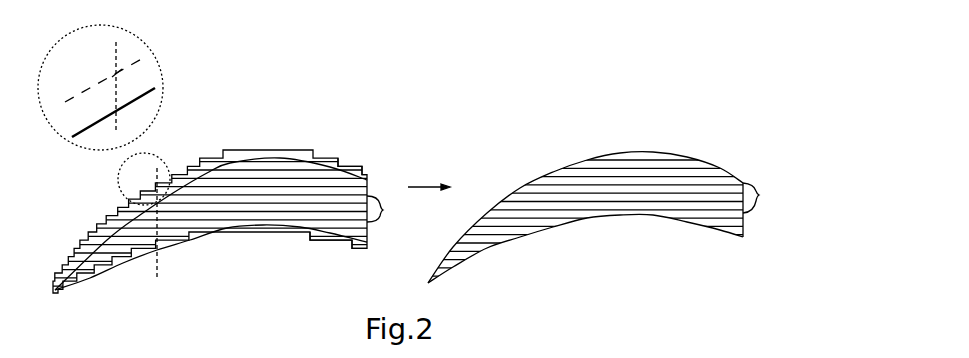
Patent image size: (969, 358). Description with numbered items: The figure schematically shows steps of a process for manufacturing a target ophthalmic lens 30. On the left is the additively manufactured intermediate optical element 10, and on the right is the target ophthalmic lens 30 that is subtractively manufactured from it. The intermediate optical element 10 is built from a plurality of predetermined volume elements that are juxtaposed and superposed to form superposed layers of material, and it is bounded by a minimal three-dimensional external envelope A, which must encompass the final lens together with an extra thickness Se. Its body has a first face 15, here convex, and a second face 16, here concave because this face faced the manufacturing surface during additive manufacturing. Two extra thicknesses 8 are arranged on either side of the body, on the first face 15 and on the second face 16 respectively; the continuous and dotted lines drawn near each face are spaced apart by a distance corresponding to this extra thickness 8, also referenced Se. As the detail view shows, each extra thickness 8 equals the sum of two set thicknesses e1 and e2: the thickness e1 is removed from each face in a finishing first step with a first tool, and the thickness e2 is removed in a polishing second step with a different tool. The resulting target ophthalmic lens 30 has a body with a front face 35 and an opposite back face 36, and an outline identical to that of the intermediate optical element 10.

The intermediate optical element 10 is at (236, 170).
The extra thicknesses 8 is at (212, 157).
The minimal three-dimensional external envelope A is at (238, 157).
The first face 15 is at (347, 163).
The second face 16 is at (300, 237).
The target ophthalmic lens 30 is at (606, 167).
The front face 35 is at (595, 157).
The back face 36 is at (630, 217).
The extra thickness Se is at (109, 152).
The set thickness removed in finishing step e1 is at (105, 79).
The set thickness removed in polishing step e2 is at (113, 112).